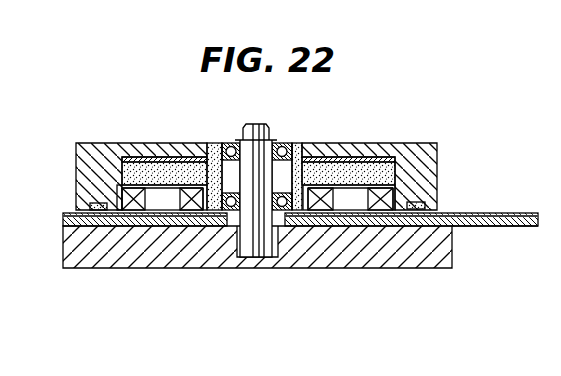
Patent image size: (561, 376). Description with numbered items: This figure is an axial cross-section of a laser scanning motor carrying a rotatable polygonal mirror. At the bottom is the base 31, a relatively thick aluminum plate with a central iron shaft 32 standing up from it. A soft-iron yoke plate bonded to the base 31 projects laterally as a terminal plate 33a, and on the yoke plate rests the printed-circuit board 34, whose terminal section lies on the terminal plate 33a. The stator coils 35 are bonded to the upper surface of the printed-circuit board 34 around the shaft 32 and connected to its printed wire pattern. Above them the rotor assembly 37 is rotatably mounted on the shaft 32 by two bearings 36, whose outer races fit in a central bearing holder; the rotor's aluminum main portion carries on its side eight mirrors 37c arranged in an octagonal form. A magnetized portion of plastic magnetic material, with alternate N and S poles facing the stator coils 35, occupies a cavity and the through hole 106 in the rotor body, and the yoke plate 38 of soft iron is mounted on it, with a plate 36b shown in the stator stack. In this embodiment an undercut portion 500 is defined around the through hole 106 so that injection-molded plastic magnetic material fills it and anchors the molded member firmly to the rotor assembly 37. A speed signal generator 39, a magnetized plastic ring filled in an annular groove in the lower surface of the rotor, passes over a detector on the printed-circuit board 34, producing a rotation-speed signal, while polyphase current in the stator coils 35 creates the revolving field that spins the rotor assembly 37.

The base 31 is at (128, 264).
The central shaft 32 is at (263, 258).
The terminal plate 33a is at (522, 227).
The printed-circuit board 34 is at (310, 202).
The stator coils 35 is at (190, 210).
The bearings 36 is at (225, 143).
The yoke plate 36b is at (160, 162).
The rotor assembly 37 is at (287, 152).
The mirrors 37c is at (440, 177).
The yoke plate 38 is at (373, 154).
The speed signal generator 39 is at (413, 205).
The through hole 106 is at (298, 148).
The undercut portion 500 is at (337, 153).